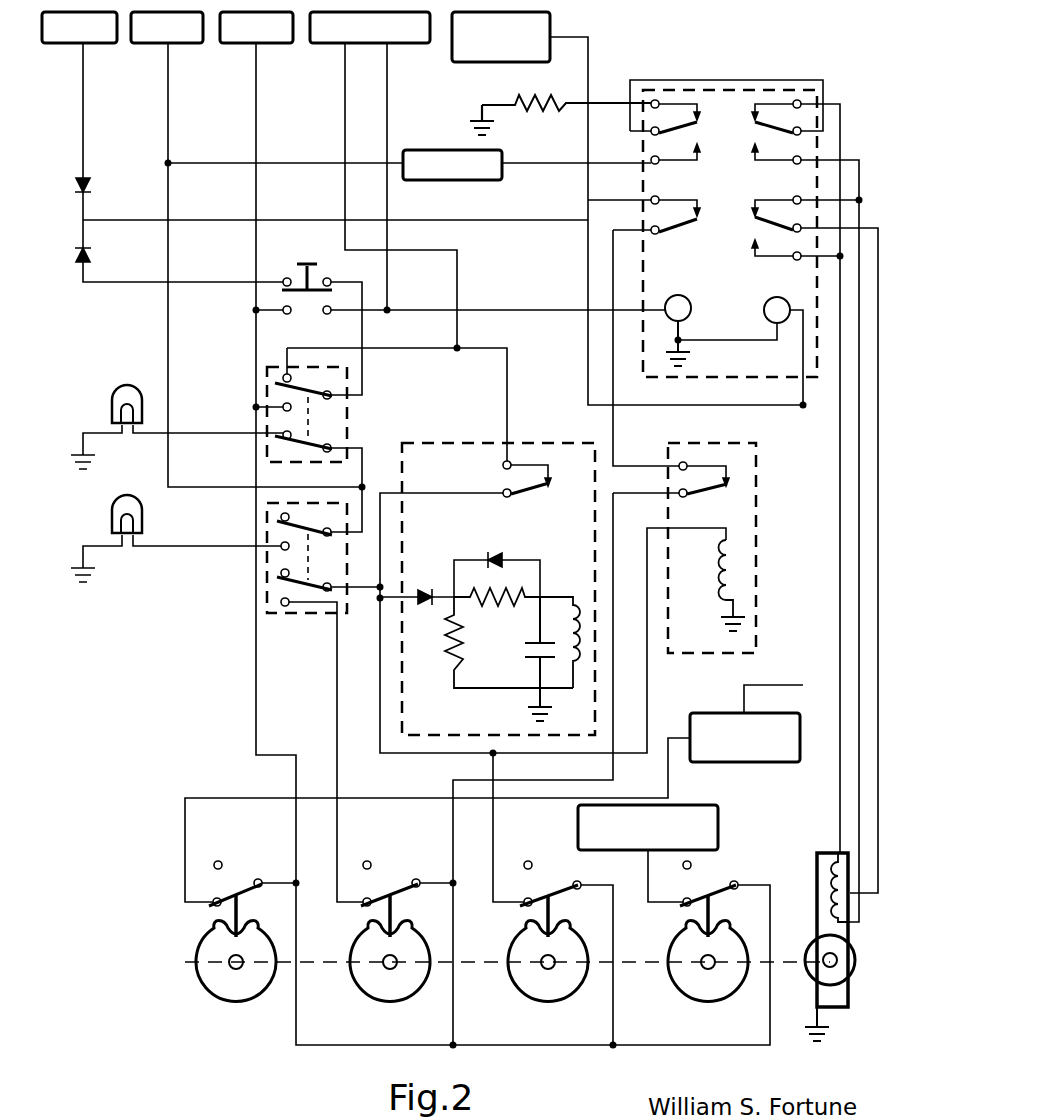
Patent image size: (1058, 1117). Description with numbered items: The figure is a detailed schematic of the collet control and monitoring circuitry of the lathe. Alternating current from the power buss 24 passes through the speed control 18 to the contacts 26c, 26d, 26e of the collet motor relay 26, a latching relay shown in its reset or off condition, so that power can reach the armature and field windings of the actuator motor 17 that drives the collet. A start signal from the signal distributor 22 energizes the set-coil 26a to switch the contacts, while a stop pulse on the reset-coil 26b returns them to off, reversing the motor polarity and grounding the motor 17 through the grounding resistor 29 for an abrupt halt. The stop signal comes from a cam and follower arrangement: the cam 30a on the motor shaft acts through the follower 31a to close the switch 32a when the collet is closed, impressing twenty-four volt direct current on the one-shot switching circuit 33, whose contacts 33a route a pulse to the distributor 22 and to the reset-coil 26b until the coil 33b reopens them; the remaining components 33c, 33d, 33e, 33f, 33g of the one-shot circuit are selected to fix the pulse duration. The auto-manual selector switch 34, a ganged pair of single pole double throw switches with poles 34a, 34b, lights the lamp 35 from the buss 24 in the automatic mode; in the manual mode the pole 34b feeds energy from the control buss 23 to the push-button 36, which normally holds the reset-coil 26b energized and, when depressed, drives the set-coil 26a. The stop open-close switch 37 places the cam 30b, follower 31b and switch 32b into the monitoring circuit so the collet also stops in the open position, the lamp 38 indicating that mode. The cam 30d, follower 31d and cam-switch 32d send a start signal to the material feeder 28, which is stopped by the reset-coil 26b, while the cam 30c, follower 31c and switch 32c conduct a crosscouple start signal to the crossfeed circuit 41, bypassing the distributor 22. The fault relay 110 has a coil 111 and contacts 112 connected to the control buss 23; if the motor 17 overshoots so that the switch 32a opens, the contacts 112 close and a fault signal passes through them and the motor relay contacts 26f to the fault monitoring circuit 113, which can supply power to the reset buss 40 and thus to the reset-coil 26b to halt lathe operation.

The reset buss 40 is at (90, 44).
The power buss 24 is at (172, 44).
The control buss 23 is at (275, 44).
The signal distributor 22 is at (421, 44).
The fault monitoring circuit 113 is at (551, 24).
The grounding resistor 29 is at (522, 98).
The speed control 18 is at (426, 149).
The collet motor relay 26 is at (730, 214).
The set-coil 26a is at (688, 318).
The reset-coil 26b is at (765, 306).
The relay contact 26c is at (692, 126).
The relay contact 26d is at (760, 113).
The relay contact 26e is at (748, 219).
The motor relay contacts 26f is at (690, 225).
The push-button 36 is at (310, 313).
The auto-manual selector switch 34 is at (338, 409).
The relay contact 34a is at (330, 446).
The pole 34b is at (290, 376).
The lamp 35 is at (115, 392).
The lamp 38 is at (145, 522).
The stop open-close switch 37 is at (262, 593).
The one-shot switching circuit 33 is at (488, 527).
The one-shot contacts 33a is at (503, 466).
The coil 33b is at (572, 615).
The resistor 33c is at (512, 598).
The resistor 33d is at (450, 668).
The capacitor 33e is at (528, 651).
The diode 33f is at (443, 553).
The diode 33g is at (505, 560).
The fault relay 110 is at (733, 548).
The fault relay coil 111 is at (716, 566).
The fault relay contacts 112 is at (700, 492).
The material feeder 28 is at (712, 712).
The crossfeed circuit 41 is at (727, 818).
The cam switch 32a is at (540, 892).
The cam-switch 32b is at (380, 892).
The switch 32c is at (708, 888).
The cam-switch 32d is at (226, 892).
The cam follower 31a is at (544, 912).
The cam follower 31b is at (386, 912).
The follower 31c is at (704, 908).
The follower 31d is at (232, 912).
The cam 30a is at (548, 1003).
The cam 30b is at (398, 1003).
The cam 30c is at (690, 1000).
The cam 30d is at (222, 1003).
The actuator motor 17 is at (858, 966).